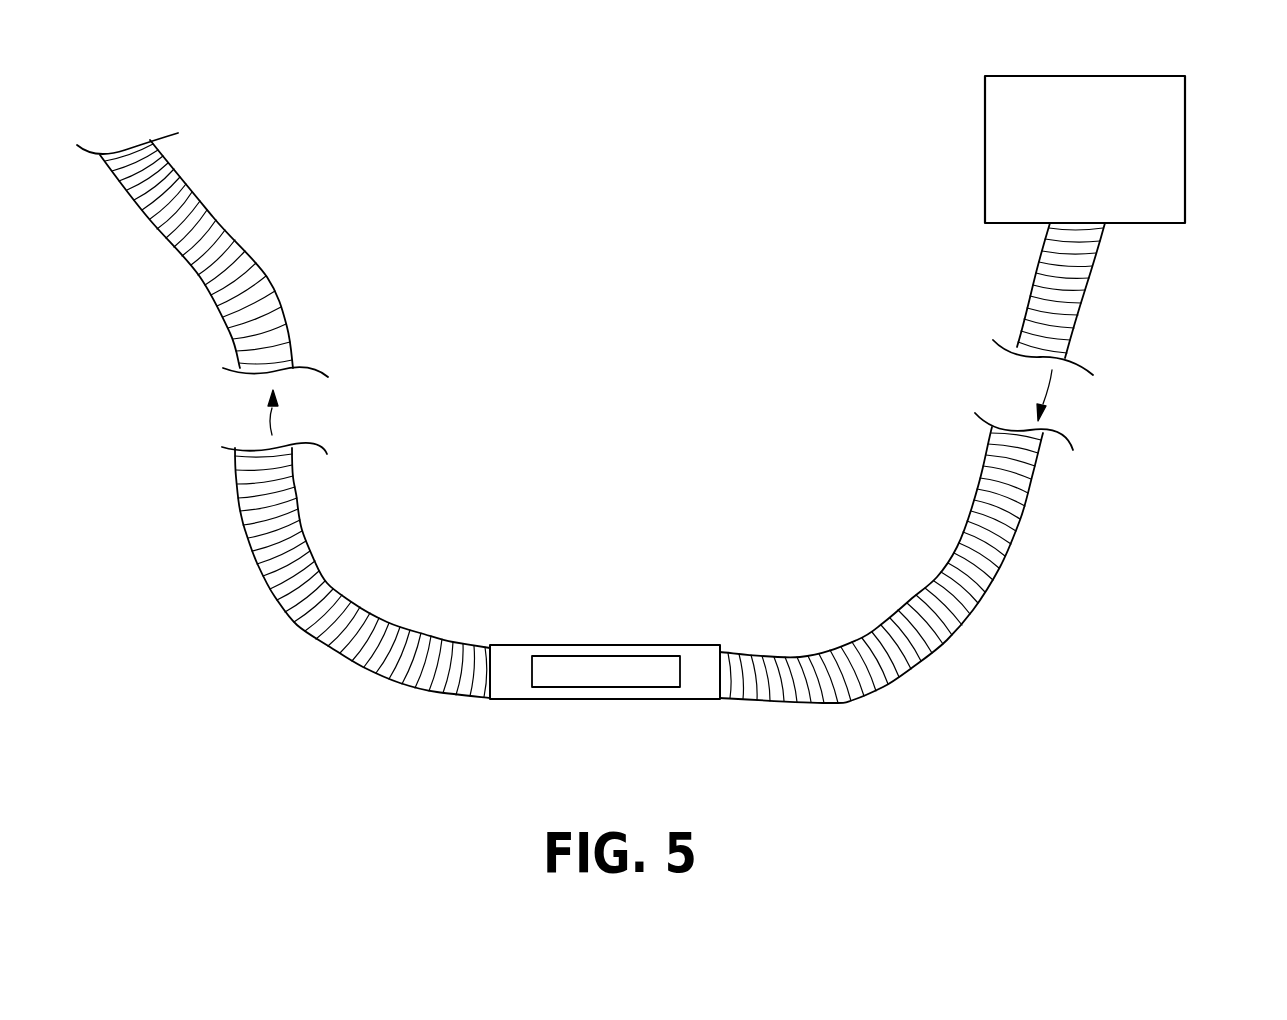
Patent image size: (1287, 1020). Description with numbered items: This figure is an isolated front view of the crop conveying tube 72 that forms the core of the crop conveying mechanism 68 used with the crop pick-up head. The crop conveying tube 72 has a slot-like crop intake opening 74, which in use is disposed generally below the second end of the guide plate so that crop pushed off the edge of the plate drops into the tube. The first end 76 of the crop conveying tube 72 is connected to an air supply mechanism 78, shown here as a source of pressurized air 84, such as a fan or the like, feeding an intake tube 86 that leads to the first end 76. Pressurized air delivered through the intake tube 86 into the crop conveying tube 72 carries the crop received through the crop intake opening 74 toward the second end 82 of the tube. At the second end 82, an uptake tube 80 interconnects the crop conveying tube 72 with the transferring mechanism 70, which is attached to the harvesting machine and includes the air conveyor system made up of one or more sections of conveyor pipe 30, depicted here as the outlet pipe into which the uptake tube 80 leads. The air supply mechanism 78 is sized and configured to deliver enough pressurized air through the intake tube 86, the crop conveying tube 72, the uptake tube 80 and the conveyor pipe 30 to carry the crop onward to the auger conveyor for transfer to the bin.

The conveyor pipe 30 is at (215, 221).
The crop conveying mechanism 68 is at (636, 458).
The transferring mechanism 70 is at (141, 262).
The crop conveying tube 72 is at (537, 650).
The crop intake opening 74 is at (600, 673).
The first end 76 is at (718, 626).
The air supply mechanism 78 is at (1168, 287).
The uptake tube 80 is at (298, 620).
The second end 82 is at (487, 738).
The source of pressurized air 84 is at (1020, 150).
The intake tube 86 is at (937, 633).